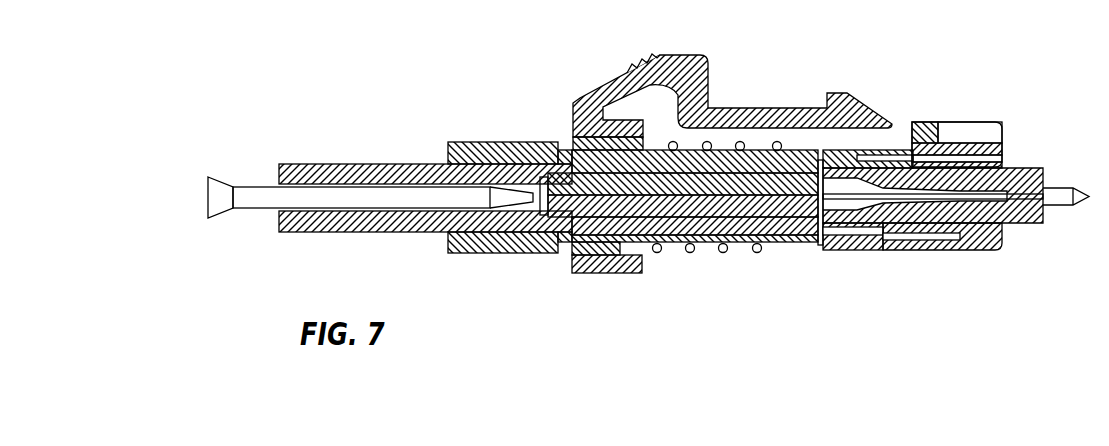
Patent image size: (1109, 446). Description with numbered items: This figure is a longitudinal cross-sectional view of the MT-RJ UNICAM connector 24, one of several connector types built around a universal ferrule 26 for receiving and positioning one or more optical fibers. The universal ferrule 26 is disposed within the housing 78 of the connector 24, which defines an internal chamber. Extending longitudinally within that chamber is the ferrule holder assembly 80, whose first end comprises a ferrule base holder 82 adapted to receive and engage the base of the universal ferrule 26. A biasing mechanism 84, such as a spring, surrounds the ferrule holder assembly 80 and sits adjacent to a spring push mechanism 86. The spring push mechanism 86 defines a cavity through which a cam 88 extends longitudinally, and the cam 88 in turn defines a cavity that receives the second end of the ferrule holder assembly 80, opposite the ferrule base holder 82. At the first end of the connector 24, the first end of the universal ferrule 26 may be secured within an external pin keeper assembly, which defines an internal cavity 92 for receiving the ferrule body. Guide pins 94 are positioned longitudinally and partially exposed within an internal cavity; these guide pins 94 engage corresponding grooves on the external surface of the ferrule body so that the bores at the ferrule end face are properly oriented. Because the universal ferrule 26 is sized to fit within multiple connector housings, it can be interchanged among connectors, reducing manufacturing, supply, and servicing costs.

The MT-RJ UNICAM connector 24 is at (658, 208).
The universal ferrule 26 is at (1023, 223).
The housing 78 is at (822, 250).
The ferrule holder assembly 80 is at (345, 164).
The ferrule base holder 82 is at (800, 150).
The biasing mechanism 84 is at (653, 255).
The spring push mechanism 86 is at (570, 250).
The cam 88 is at (455, 142).
The internal cavity 92 is at (967, 240).
The guide pins 94 is at (1084, 207).